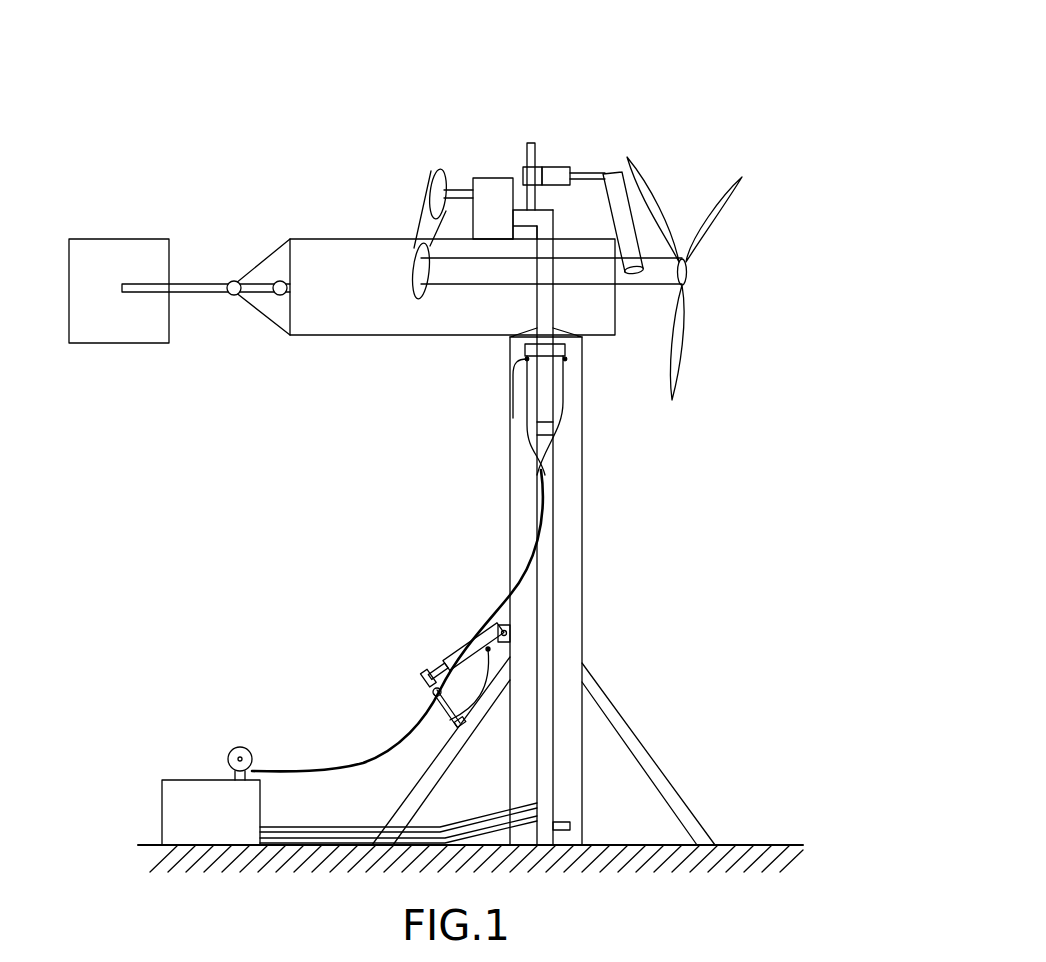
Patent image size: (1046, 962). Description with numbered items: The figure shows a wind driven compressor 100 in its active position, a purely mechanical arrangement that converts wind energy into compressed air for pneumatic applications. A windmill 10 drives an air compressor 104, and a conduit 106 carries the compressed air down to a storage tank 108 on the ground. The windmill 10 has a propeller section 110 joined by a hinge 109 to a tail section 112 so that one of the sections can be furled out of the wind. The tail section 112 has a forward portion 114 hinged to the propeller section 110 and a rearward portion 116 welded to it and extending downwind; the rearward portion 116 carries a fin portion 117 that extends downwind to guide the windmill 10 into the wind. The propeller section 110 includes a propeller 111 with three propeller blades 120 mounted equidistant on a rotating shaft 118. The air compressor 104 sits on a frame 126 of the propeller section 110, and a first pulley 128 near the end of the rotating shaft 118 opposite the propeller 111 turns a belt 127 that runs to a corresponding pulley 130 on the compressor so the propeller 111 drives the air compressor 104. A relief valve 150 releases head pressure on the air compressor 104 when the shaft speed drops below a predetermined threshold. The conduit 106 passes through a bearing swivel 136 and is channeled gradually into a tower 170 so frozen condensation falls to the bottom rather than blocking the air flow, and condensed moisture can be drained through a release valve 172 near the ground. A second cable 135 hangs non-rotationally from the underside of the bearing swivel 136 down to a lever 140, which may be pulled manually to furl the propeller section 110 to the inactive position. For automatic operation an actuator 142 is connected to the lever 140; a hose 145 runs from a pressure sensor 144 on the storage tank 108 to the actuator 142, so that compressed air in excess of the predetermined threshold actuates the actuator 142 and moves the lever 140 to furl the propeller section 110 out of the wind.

The wind driven compressor 100 is at (645, 90).
The windmill 10 is at (282, 192).
The tail section 112 is at (205, 210).
The propeller section 110 is at (777, 197).
The propeller 111 is at (693, 302).
The fin portion 117 is at (97, 343).
The rearward portion 116 is at (270, 327).
The forward portion 114 is at (410, 337).
The rotating shaft 118 is at (655, 277).
The first pulley 128 is at (413, 272).
The belt 127 is at (428, 203).
The pulley 130 is at (440, 168).
The air compressor 104 is at (497, 178).
The relief valve 150 is at (531, 143).
The hinge 109 is at (537, 305).
The propeller blades 120 is at (742, 177).
The frame 126 is at (593, 307).
The tower 170 is at (582, 553).
The conduit 106 is at (553, 652).
The bearing swivel 136 is at (513, 418).
The second cable 135 is at (528, 565).
The hose 145 is at (366, 762).
The actuator 142 is at (465, 665).
The lever 140 is at (440, 705).
The storage tank 108 is at (170, 778).
The pressure sensor 144 is at (238, 746).
The release valve 172 is at (570, 826).